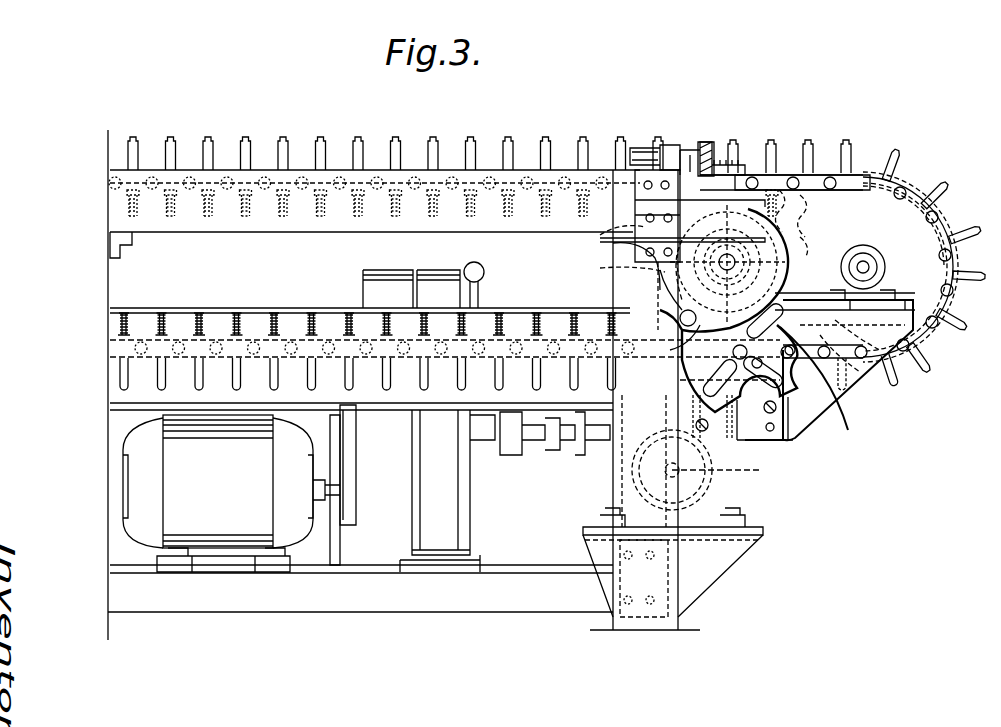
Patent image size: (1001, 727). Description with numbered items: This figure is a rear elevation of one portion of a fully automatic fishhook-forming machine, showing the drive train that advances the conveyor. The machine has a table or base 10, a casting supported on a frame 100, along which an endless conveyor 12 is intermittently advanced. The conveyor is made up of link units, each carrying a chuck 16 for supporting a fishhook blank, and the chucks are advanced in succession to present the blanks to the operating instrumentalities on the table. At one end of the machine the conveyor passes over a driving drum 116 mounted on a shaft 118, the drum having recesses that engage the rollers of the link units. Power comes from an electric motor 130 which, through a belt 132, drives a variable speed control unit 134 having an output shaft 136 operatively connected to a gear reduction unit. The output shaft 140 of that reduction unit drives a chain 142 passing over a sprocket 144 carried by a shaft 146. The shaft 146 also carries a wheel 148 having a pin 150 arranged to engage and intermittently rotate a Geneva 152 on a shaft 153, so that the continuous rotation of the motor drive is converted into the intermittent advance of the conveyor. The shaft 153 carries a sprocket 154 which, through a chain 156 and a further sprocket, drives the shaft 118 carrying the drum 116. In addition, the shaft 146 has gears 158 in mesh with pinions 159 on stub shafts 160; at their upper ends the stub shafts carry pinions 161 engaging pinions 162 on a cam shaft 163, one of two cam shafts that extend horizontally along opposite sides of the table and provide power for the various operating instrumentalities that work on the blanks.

The table or base 10 is at (112, 226).
The endless conveyor 12 is at (571, 157).
The chuck 16 is at (545, 158).
The frame 100 is at (630, 309).
The driving drum 116 is at (905, 228).
The shaft 118 is at (866, 270).
The electric motor 130 is at (290, 552).
The belt 132 is at (345, 440).
The variable speed control unit 134 is at (440, 490).
The output shaft 136 is at (540, 425).
The output shaft 140 is at (700, 470).
The chain 142 is at (635, 430).
The sprocket 144 is at (650, 240).
The shaft 146 is at (740, 263).
The wheel 148 is at (650, 266).
The pin 150 is at (682, 314).
The Geneva 152 is at (842, 420).
The shaft 153 is at (755, 343).
The sprocket 154 is at (782, 412).
The chain 156 is at (855, 385).
The gears 158 is at (790, 262).
The pinions 159 is at (866, 216).
The stub shafts 160 is at (810, 170).
The pinions 161 is at (758, 185).
The pinions 162 is at (706, 148).
The cam shaft 163 is at (640, 160).